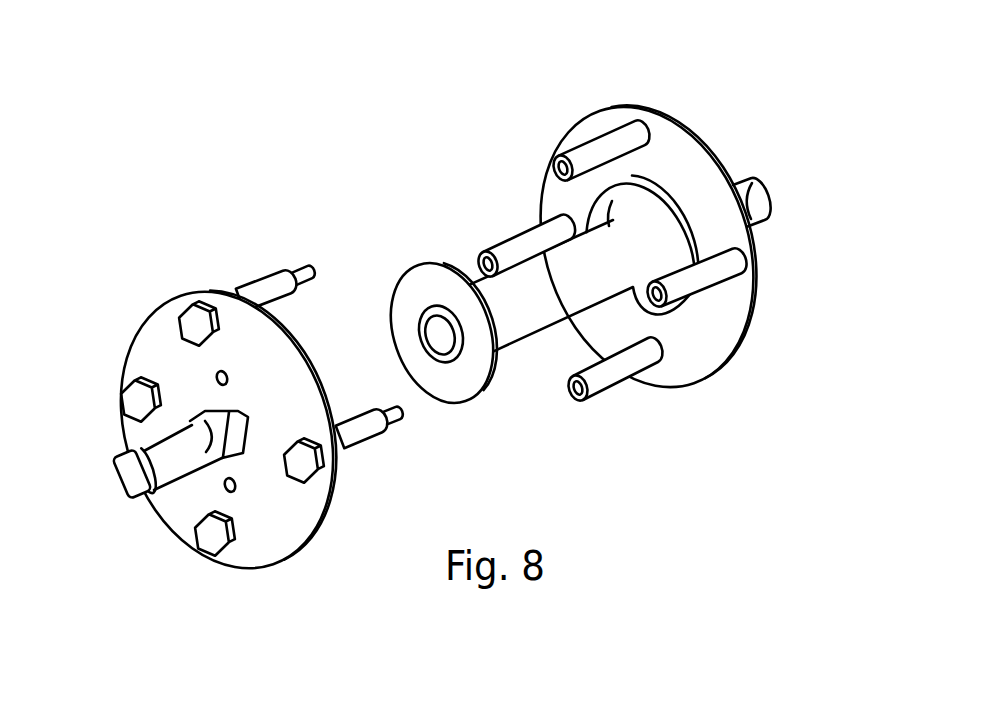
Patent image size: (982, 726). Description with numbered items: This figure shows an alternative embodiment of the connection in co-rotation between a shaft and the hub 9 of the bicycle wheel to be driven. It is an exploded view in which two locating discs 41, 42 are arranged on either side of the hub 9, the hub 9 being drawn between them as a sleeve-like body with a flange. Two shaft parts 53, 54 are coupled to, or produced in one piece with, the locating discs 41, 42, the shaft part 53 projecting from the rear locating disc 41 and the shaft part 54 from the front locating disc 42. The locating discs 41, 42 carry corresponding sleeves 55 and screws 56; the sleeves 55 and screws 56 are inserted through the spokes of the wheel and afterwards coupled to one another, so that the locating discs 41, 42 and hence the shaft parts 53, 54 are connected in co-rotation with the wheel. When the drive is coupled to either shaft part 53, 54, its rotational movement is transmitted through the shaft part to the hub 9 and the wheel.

The hub 9 is at (540, 308).
The locating disc 41 is at (703, 333).
The locating disc 42 is at (263, 542).
The shaft part 53 is at (748, 203).
The shaft part 54 is at (172, 455).
The sleeves 55 is at (508, 253).
The screws 56 is at (263, 288).